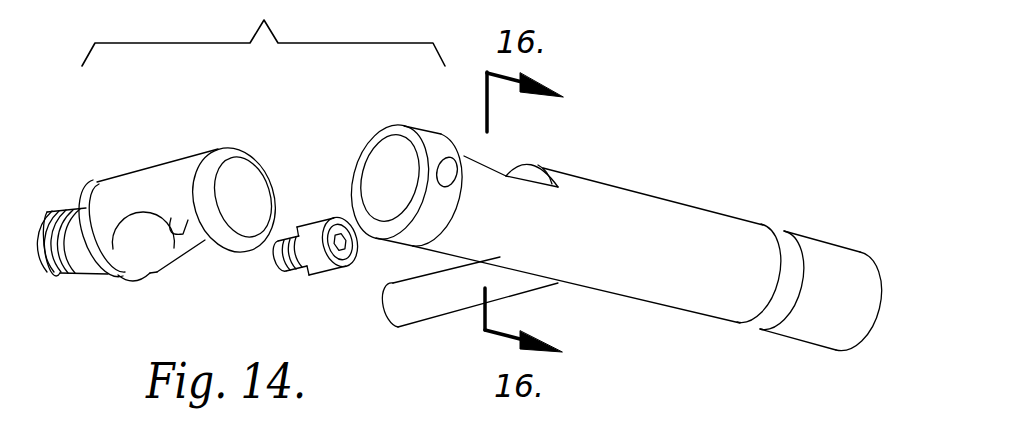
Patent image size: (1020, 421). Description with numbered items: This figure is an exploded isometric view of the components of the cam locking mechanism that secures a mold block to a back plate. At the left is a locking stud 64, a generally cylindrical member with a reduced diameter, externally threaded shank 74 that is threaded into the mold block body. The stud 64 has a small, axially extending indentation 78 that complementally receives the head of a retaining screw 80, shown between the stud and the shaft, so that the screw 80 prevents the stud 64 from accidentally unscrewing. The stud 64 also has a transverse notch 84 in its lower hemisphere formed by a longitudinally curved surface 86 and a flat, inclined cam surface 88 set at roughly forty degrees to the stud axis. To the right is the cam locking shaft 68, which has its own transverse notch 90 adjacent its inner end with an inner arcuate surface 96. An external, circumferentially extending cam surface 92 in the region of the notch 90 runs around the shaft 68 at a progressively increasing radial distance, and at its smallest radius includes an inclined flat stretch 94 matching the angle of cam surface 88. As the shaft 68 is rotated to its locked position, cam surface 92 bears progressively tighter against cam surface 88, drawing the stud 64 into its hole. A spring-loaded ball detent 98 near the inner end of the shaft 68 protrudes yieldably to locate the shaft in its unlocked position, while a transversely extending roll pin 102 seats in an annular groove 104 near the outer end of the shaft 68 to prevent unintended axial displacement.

The locking stud 64 is at (170, 142).
The transverse notch 84 is at (128, 212).
The externally threaded shank 74 is at (58, 268).
The curved surface 86 is at (133, 250).
The inclined cam surface 88 is at (170, 217).
The axially extending indentation 78 is at (138, 274).
The retaining screw 80 is at (318, 263).
The inclined flat stretch 94 is at (464, 156).
The spring-loaded ball detent 98 is at (440, 172).
The transverse notch 90 is at (513, 154).
The inner arcuate surface 96 is at (526, 178).
The cam surface 92 is at (550, 207).
The annular groove 104 is at (787, 250).
The cam locking shaft 68 is at (712, 194).
The roll pin 102 is at (422, 314).